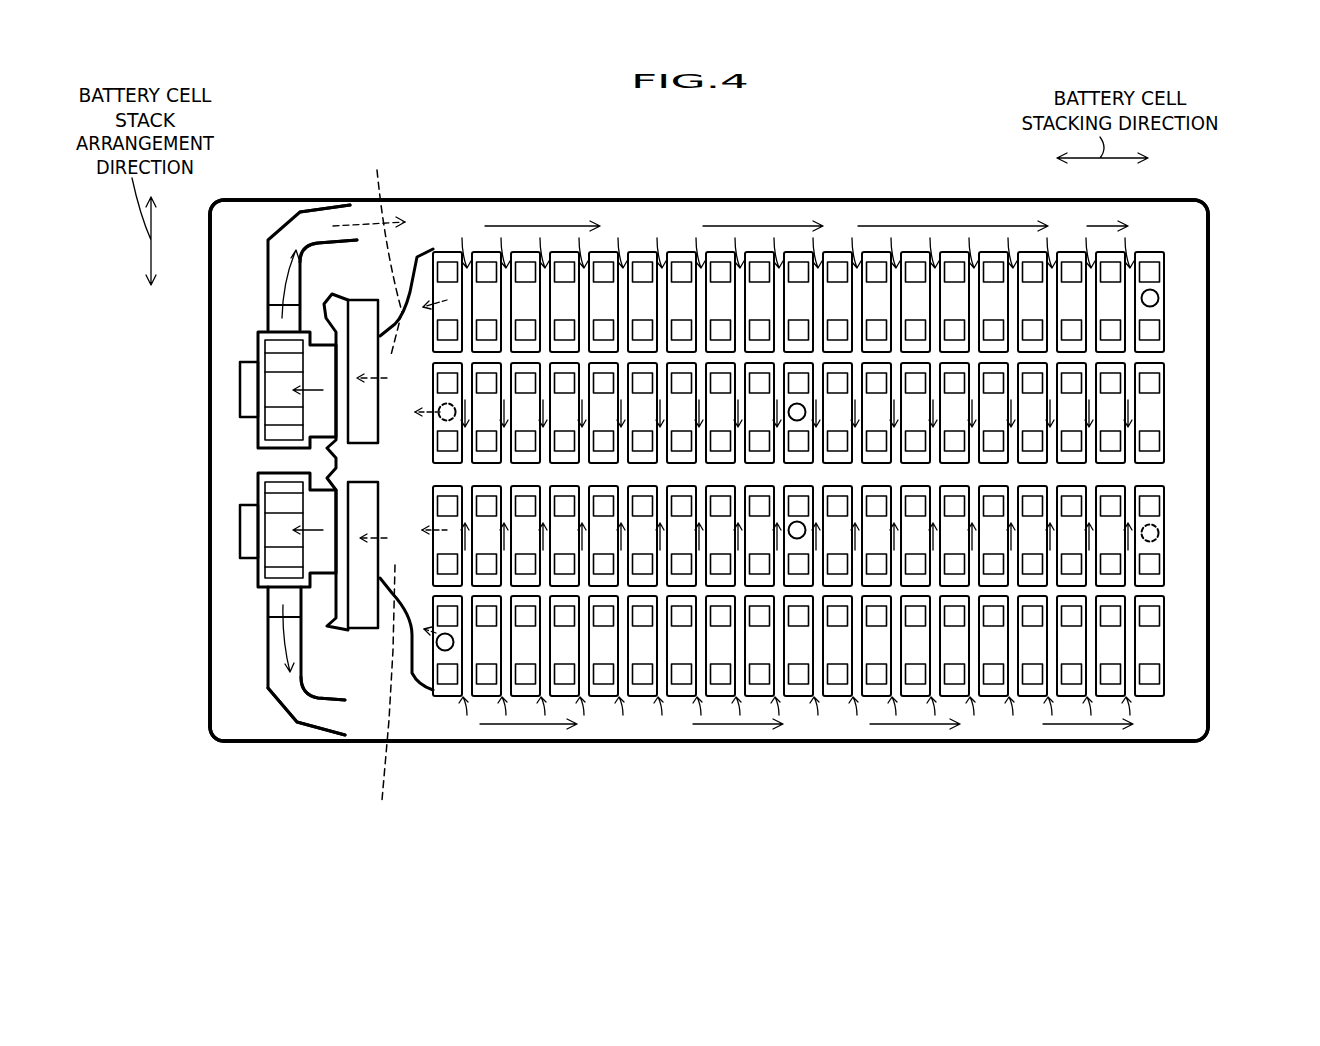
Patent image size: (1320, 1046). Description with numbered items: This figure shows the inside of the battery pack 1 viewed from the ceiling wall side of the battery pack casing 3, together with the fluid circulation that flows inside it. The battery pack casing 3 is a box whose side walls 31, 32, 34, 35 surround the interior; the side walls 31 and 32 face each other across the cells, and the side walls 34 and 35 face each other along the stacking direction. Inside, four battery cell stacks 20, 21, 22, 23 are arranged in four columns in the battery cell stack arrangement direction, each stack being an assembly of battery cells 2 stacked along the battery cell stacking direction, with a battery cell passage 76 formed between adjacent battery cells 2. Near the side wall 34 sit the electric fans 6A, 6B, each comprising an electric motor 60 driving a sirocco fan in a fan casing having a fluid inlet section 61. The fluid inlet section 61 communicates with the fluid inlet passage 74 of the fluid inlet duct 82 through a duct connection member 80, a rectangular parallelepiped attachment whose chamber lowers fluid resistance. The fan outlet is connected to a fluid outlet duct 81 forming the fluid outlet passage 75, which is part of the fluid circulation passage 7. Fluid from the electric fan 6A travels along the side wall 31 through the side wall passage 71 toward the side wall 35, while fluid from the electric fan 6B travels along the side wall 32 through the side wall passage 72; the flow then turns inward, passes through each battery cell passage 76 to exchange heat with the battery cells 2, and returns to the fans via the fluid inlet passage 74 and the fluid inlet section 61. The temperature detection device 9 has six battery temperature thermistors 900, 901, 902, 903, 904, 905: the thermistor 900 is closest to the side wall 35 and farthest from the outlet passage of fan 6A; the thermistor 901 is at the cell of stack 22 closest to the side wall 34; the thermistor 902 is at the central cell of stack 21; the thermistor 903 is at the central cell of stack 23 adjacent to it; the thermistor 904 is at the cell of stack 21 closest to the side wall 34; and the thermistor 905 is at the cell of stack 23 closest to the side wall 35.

The battery pack 1 is at (978, 185).
The battery cell 2 is at (1160, 317).
The battery pack casing 3 is at (200, 731).
The electric fan 6A is at (248, 455).
The electric fan 6B is at (231, 567).
The fluid circulation passage 7 is at (520, 722).
The temperature detection device 9 is at (855, 469).
The battery cell stack 20 is at (844, 272).
The battery cell stack 21 is at (1181, 415).
The battery cell stack 22 is at (1180, 676).
The battery cell stack 23 is at (1180, 572).
The side wall 31 is at (750, 200).
The side wall 32 is at (733, 742).
The side wall 34 is at (210, 307).
The side wall 35 is at (1210, 317).
The electric motor 60 is at (240, 538).
The fluid inlet section 61 is at (315, 550).
The side wall passage 71 is at (638, 225).
The side wall passage 72 is at (658, 720).
The fluid inlet passage 74 is at (385, 485).
The fluid outlet passage 75 is at (328, 722).
The battery cell passage 76 is at (1010, 645).
The duct connection member 80 is at (366, 641).
The fluid outlet duct 81 is at (300, 723).
The fluid inlet duct 82 is at (403, 652).
The battery temperature thermistor 900 is at (1153, 300).
The battery temperature thermistor 901 is at (447, 650).
The battery temperature thermistor 902 is at (797, 404).
The battery temperature thermistor 903 is at (798, 538).
The battery temperature thermistor 904 is at (447, 403).
The battery temperature thermistor 905 is at (1160, 534).